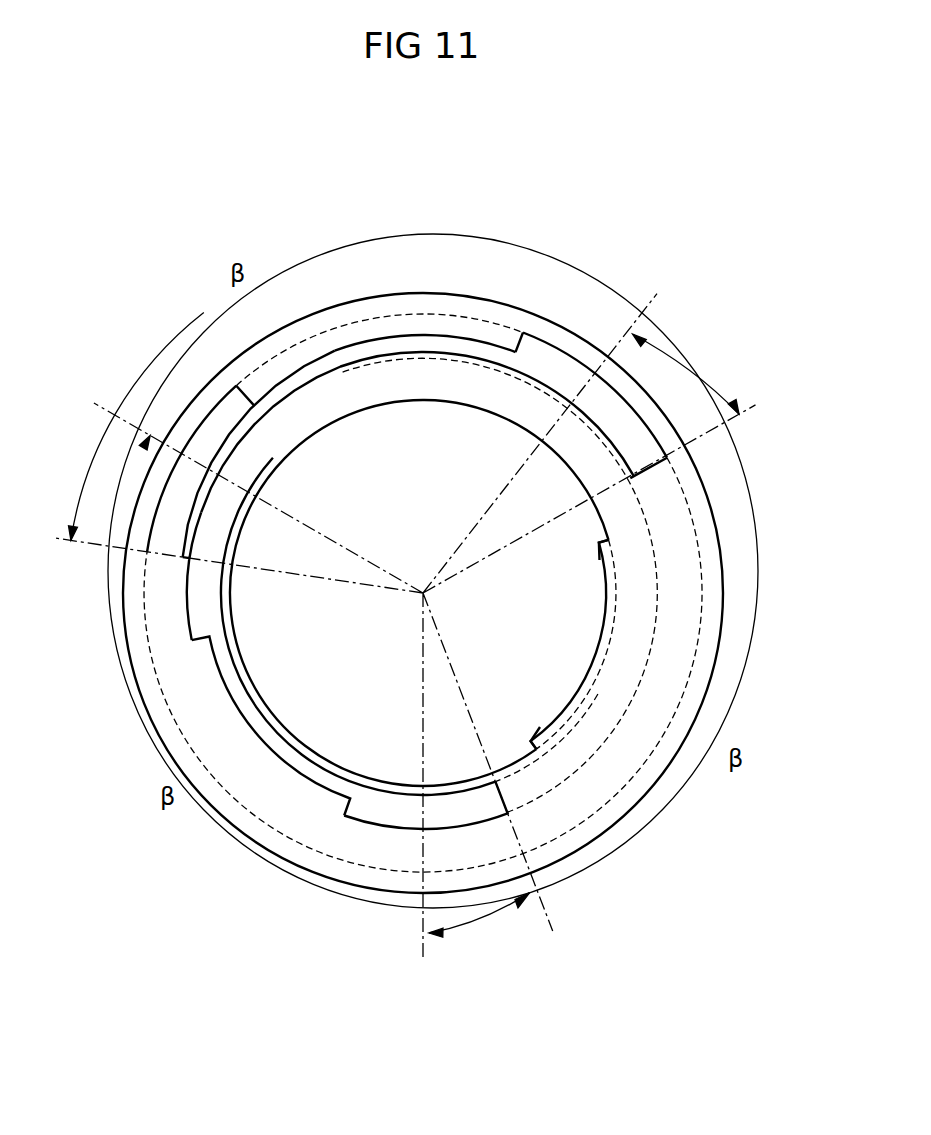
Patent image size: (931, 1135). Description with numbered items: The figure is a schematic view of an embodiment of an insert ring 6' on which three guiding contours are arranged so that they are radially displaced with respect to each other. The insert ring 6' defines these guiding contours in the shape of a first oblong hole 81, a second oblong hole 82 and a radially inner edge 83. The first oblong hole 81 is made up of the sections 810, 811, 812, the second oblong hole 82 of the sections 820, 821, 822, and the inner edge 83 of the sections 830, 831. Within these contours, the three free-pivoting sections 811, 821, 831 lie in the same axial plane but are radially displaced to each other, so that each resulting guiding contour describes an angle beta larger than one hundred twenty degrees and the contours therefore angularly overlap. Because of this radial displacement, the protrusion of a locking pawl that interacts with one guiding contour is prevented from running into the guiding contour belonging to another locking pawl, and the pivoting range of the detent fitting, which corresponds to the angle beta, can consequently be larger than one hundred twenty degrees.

The insert ring 6' is at (433, 546).
The first oblong hole 81 is at (625, 425).
The section of the first oblong hole 810 is at (570, 346).
The free-pivoting section 811 is at (400, 335).
The section of the first oblong hole 812 is at (205, 418).
The second oblong hole 82 is at (203, 603).
The section of the second oblong hole 820 is at (188, 583).
The free-pivoting section 821 is at (303, 773).
The section of the second oblong hole 822 is at (465, 830).
The radially inner edge 83 is at (594, 620).
The section of the inner edge 830 is at (606, 522).
The free-pivoting section 831 is at (598, 657).